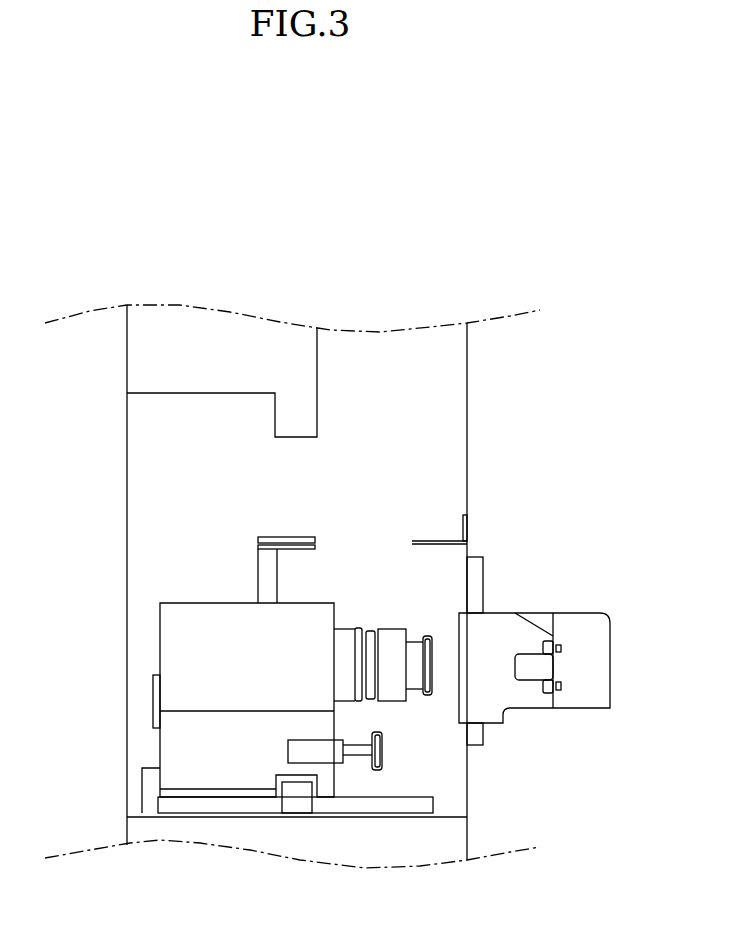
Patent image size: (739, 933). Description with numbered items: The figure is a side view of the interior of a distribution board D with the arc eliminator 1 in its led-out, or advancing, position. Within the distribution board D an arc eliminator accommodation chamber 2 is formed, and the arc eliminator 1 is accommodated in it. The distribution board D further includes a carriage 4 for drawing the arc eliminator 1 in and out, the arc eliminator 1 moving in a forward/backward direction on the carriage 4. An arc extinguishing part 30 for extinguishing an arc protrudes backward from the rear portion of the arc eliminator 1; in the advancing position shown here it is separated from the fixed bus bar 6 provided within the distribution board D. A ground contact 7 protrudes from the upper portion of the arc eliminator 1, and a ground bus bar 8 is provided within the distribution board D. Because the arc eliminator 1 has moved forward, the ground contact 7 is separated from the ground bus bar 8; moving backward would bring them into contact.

The arc eliminator 1 is at (146, 626).
The arc eliminator accommodation chamber 2 is at (178, 478).
The carriage 4 is at (198, 806).
The fixed bus bar 6 is at (533, 662).
The ground contact 7 is at (292, 537).
The ground bus bar 8 is at (441, 540).
The arc extinguishing part 30 is at (387, 615).
The distribution board D is at (428, 296).